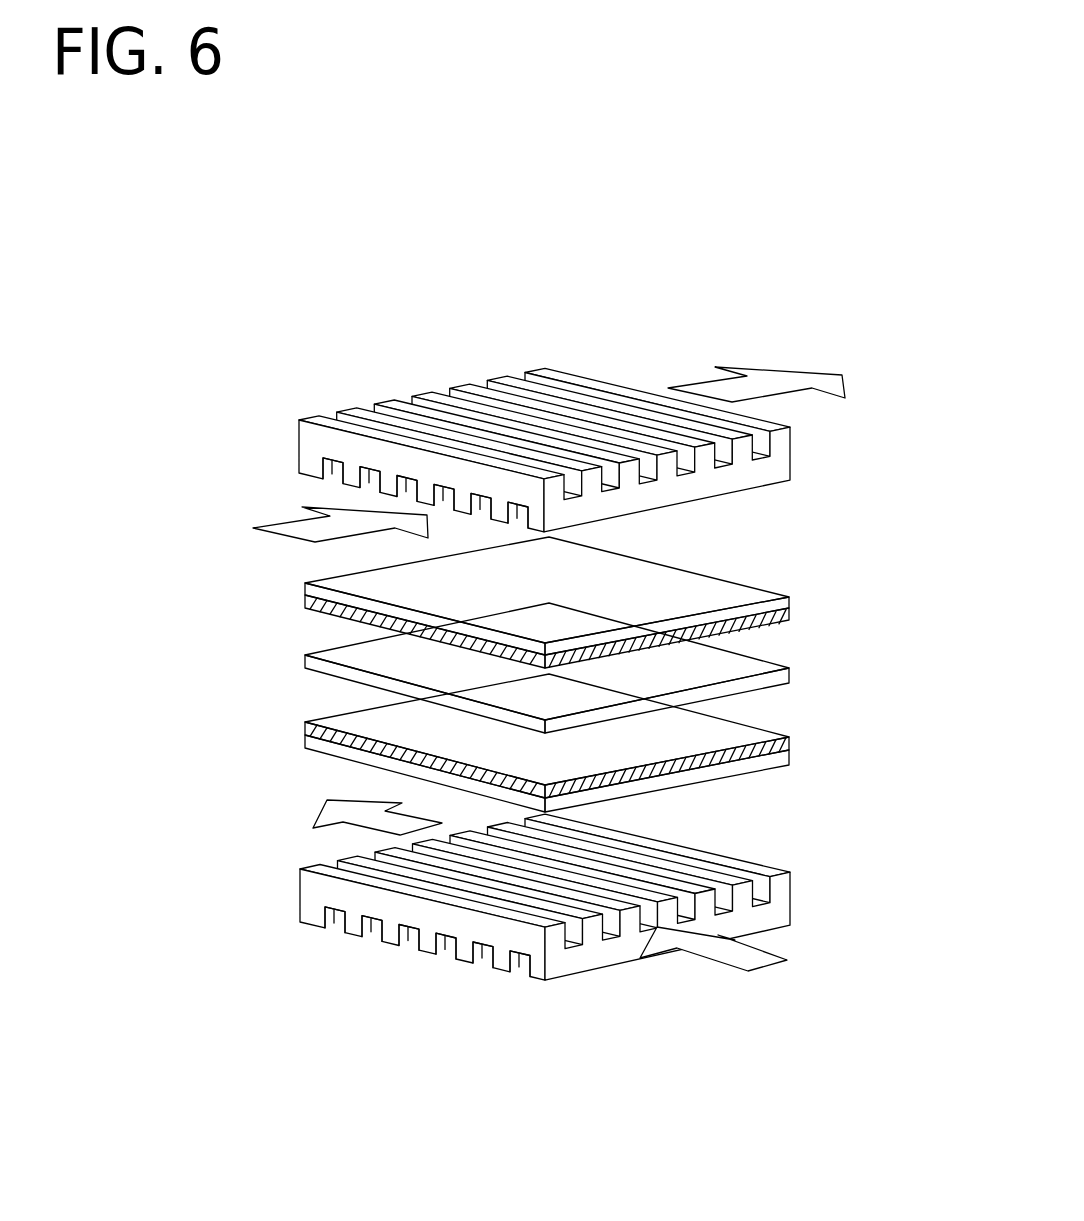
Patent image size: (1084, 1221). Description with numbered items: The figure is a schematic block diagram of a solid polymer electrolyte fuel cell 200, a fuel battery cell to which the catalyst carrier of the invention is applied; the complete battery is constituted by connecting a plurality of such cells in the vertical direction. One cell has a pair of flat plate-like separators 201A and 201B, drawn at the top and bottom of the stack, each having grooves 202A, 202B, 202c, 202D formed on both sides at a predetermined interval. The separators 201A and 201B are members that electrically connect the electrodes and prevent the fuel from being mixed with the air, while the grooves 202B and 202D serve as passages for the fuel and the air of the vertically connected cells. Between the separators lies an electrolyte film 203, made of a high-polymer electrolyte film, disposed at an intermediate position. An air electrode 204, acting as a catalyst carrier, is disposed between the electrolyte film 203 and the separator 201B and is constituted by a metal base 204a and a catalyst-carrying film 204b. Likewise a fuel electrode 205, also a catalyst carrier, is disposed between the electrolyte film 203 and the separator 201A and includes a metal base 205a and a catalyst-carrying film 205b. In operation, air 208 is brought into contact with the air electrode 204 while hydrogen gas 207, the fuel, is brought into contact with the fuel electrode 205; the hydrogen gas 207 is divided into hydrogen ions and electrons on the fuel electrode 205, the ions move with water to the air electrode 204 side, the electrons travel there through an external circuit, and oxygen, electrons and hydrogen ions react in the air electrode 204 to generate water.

The solid polymer electrolyte fuel cell 200 is at (272, 392).
The separator 201A is at (553, 403).
The separator 201B is at (619, 950).
The groove 202A is at (332, 476).
The groove 202B is at (793, 440).
The groove 202c is at (793, 881).
The groove 202D is at (373, 932).
The electrolyte film 203 is at (322, 668).
The air electrode 204 is at (621, 743).
The metal base 204a is at (789, 760).
The catalyst-carrying film 204b is at (790, 738).
The fuel electrode 205 is at (621, 602).
The metal base 205a is at (790, 598).
The catalyst-carrying film 205b is at (791, 618).
The hydrogen gas 207 is at (290, 536).
The air 208 is at (766, 967).